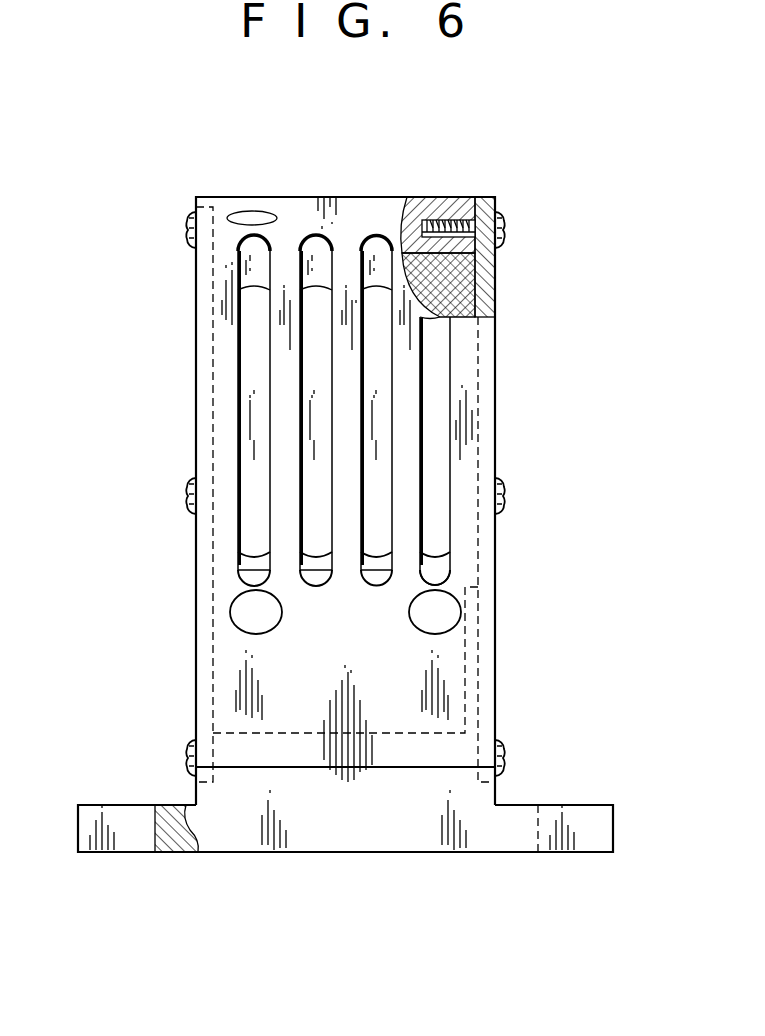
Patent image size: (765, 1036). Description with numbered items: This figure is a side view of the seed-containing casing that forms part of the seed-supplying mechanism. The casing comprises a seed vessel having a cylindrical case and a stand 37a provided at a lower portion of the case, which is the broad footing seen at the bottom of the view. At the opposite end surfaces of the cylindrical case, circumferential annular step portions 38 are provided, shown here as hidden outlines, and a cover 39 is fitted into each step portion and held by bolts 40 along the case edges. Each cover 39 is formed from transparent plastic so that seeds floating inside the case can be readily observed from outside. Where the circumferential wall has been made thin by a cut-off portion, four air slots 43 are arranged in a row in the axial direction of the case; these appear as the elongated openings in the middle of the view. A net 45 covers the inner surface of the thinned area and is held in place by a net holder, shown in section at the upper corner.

The stand 37a is at (466, 852).
The annular step portion 38 is at (213, 747).
The cover 39 is at (196, 662).
The bolt 40 is at (187, 766).
The air slot 43 is at (318, 410).
The net 45 is at (480, 292).